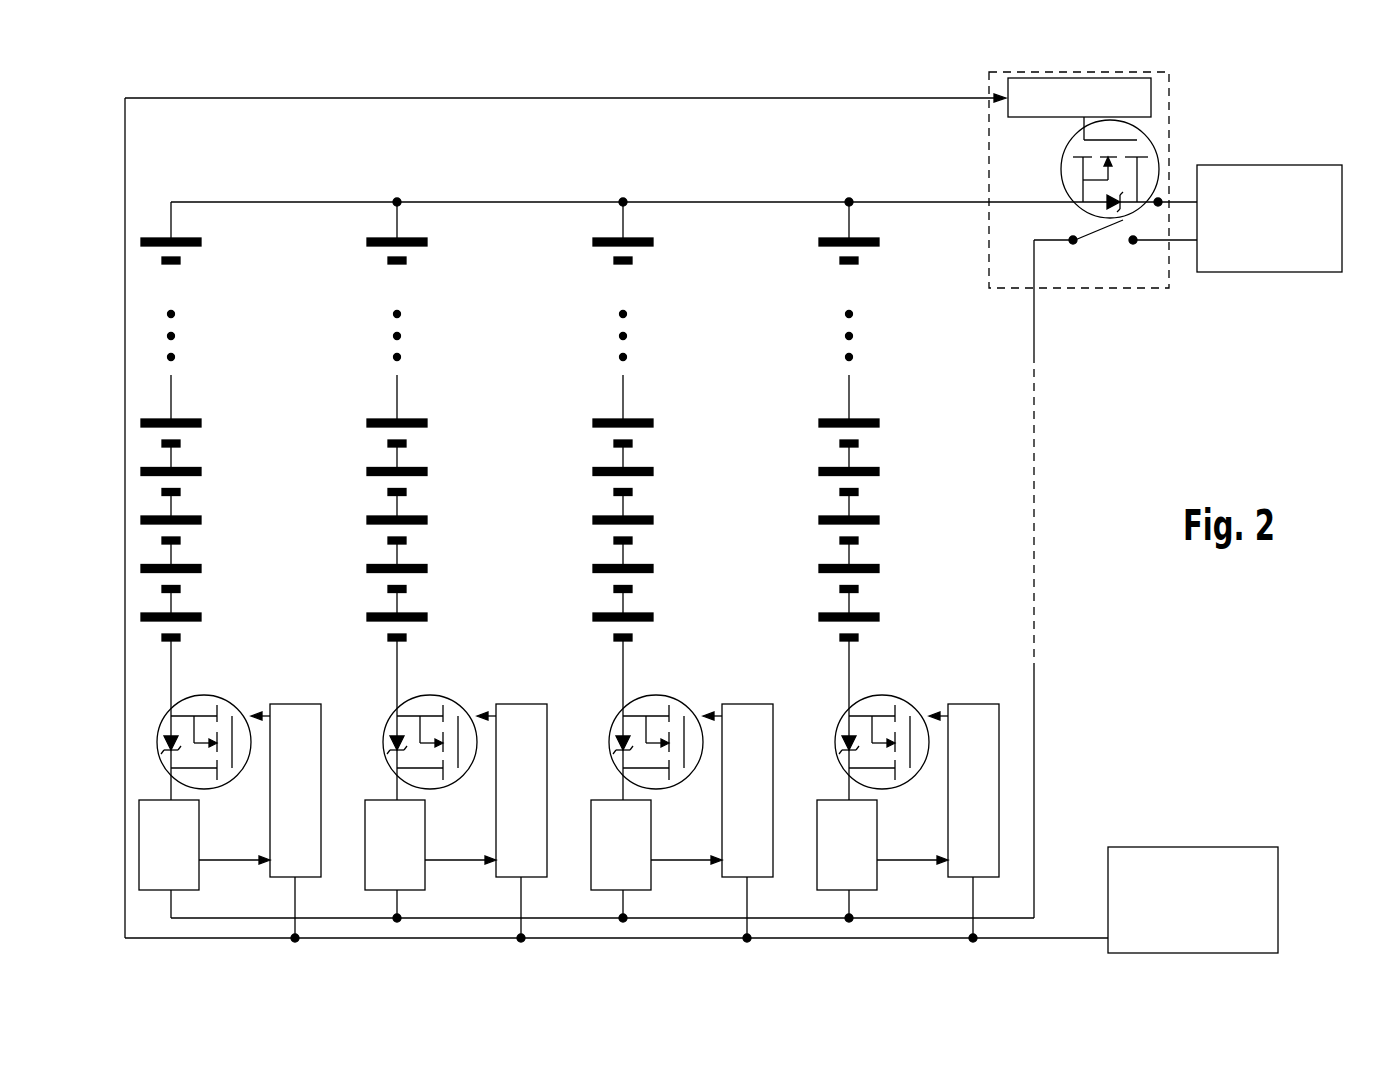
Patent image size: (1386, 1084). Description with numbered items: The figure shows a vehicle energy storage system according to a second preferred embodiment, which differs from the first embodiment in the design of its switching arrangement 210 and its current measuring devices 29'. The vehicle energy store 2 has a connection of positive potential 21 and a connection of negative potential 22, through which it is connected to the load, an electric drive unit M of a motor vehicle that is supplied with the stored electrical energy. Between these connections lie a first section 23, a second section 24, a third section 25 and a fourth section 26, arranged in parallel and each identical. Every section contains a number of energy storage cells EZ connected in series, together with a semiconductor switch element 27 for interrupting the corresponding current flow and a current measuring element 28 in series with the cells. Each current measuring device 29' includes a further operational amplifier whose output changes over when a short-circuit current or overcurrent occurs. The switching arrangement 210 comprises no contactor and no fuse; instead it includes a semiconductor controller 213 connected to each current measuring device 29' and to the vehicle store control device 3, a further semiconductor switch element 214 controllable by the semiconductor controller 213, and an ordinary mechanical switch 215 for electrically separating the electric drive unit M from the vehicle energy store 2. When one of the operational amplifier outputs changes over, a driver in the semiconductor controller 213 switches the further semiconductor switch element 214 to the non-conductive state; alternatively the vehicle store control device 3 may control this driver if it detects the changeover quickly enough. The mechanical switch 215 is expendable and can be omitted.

The vehicle energy store 2 is at (992, 420).
The vehicle store control device 3 is at (1201, 815).
The connection of positive potential 21 is at (1160, 198).
The connection of negative potential 22 is at (1133, 243).
The first section 23 is at (850, 227).
The second section 24 is at (624, 227).
The third section 25 is at (398, 227).
The fourth section 26 is at (172, 227).
The semiconductor switch element 27 is at (563, 714).
The current measuring element 28 is at (543, 842).
The current measuring device 29' is at (644, 766).
The switching arrangement 210 is at (1169, 100).
The semiconductor controller 213 is at (1135, 75).
The further semiconductor switch element 214 is at (1143, 140).
The mechanical switch 215 is at (1088, 243).
The electric drive unit M is at (1320, 165).
The energy storage cell EZ is at (569, 530).